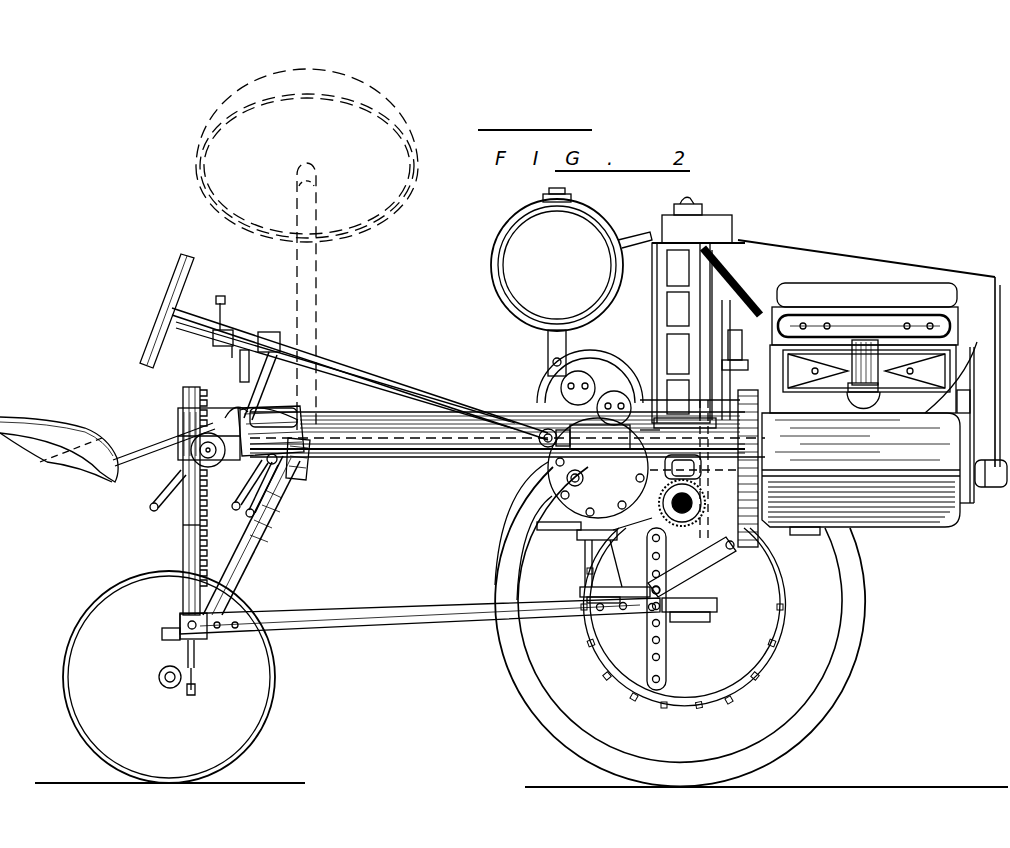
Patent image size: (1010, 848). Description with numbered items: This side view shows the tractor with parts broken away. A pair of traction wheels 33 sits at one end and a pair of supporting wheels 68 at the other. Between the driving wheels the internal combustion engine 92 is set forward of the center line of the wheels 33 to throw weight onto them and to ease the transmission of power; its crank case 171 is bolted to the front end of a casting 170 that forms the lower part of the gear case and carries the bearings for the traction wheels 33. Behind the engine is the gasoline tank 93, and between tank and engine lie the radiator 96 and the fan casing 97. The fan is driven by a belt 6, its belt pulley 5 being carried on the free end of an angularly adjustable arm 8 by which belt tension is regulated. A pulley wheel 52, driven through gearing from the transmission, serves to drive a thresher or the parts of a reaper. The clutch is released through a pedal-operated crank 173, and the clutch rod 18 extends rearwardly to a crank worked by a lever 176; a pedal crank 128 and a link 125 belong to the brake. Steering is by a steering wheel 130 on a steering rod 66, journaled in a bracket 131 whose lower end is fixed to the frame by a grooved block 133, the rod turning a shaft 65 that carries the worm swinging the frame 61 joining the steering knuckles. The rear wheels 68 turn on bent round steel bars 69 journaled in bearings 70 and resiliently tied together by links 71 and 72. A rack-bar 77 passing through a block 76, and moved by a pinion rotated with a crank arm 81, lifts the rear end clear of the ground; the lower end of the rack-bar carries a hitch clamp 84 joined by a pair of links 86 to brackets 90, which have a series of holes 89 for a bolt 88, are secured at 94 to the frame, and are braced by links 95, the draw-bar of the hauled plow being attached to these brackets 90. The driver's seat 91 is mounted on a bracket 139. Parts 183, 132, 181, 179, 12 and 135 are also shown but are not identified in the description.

The supporting wheels 68 is at (376, 102).
The round steel bars 69 is at (255, 568).
The steering wheel 130 is at (184, 262).
The clamp 183 is at (222, 296).
The steering rod 66 is at (240, 338).
The pivot clamp 132 is at (280, 345).
The bracket 181 is at (212, 343).
The block 133 is at (240, 413).
The bracket 131 is at (258, 382).
The block 76 is at (178, 420).
The bracket 139 is at (160, 452).
The driver's seat 91 is at (59, 455).
The lever 176 is at (167, 490).
The crank arm 81 is at (150, 510).
The bearings 70 is at (212, 467).
The link 71 is at (183, 533).
The rack-bar 77 is at (180, 523).
The pedal-operated crank 173 is at (236, 495).
The pedal crank 128 is at (242, 503).
The link 125 is at (295, 482).
The clutch rod 18 is at (310, 458).
The link 72 is at (335, 410).
The rod 179 is at (428, 392).
The shaft 65 is at (528, 430).
The gasoline tank 93 is at (530, 262).
The pulley wheel 52 is at (575, 352).
The radiator 96 is at (680, 270).
The fan casing 97 is at (700, 292).
The belt 6 is at (730, 305).
The belt pulley 5 is at (742, 298).
The angularly adjustable arm 8 is at (740, 352).
The internal combustion engine 92 is at (957, 367).
The crank case 171 is at (885, 525).
The pulley / sprocket 12 is at (530, 520).
The frame 61 is at (530, 536).
The traction wheels 33 is at (868, 615).
The casting 170 is at (652, 540).
The securing point 94 is at (627, 545).
The bolt 88 is at (660, 607).
The holes 89 is at (660, 640).
The brackets 90 is at (660, 679).
The links 95 is at (710, 555).
The links 86 is at (358, 628).
The hitch clamp 84 is at (176, 614).
The chain pin 135 is at (197, 668).